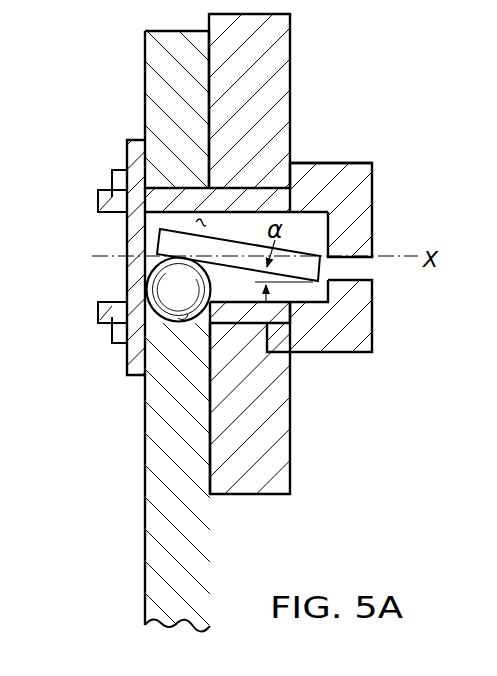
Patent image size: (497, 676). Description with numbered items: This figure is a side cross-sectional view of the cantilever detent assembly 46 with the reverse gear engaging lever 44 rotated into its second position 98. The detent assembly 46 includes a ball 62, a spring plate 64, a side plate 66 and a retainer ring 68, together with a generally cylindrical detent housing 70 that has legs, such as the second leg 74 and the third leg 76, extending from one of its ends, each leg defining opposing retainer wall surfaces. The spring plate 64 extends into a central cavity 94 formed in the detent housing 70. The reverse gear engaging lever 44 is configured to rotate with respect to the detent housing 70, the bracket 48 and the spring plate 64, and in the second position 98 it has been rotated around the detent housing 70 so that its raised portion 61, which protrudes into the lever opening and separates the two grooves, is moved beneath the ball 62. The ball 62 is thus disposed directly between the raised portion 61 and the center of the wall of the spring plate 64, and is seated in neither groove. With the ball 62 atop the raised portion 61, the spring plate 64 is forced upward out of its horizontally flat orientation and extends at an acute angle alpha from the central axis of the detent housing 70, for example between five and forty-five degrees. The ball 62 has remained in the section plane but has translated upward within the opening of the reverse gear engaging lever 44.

The reverse gear engaging lever 44 is at (160, 578).
The cantilever detent assembly 46 is at (328, 131).
The bracket 48 is at (272, 425).
The raised portion 61 is at (185, 312).
The ball 62 is at (167, 295).
The spring plate 64 is at (306, 260).
The side plate 66 is at (133, 248).
The retainer ring 68 is at (113, 171).
The detent housing 70 is at (364, 357).
The second leg 74 is at (98, 311).
The third leg 76 is at (98, 207).
The central cavity 94 is at (200, 222).
The second position 98 is at (383, 252).